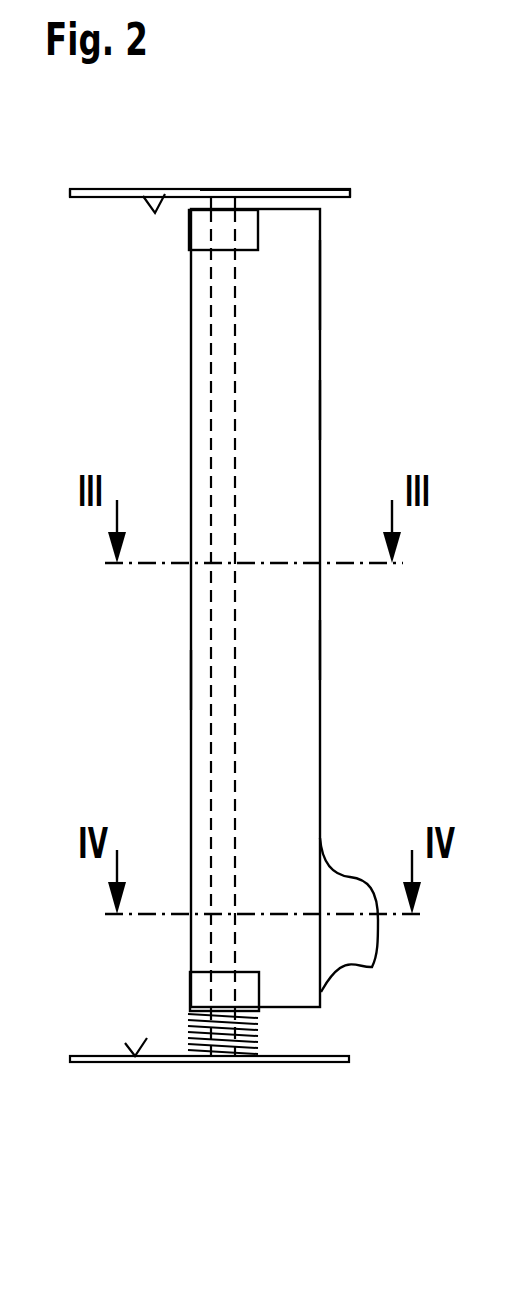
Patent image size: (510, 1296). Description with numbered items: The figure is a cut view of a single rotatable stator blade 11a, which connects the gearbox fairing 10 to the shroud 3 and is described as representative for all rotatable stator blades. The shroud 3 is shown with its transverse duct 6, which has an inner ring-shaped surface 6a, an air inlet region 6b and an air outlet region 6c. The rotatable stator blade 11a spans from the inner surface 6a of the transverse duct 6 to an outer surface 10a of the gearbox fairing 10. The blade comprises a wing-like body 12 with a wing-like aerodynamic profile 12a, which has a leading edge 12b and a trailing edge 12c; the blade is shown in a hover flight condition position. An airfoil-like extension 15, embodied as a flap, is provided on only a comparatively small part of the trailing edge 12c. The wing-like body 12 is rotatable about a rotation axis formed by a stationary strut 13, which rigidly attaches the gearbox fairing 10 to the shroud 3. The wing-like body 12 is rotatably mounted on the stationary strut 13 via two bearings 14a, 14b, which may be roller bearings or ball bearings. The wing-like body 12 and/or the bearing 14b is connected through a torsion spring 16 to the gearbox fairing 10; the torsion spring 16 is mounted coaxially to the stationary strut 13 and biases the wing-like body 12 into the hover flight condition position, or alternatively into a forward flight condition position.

The shroud 3 is at (310, 190).
The transverse duct 6 is at (104, 210).
The inner ring-shaped surface 6a is at (165, 194).
The air inlet region 6b is at (72, 193).
The air outlet region 6c is at (352, 193).
The gearbox fairing 10 is at (73, 1063).
The outer surface of the gearbox fairing 10a is at (147, 1038).
The rotatable stator blade 11a is at (323, 287).
The wing-like body 12 is at (287, 313).
The wing-like aerodynamic profile 12a is at (322, 412).
The leading edge 12b is at (191, 682).
The trailing edge 12c is at (320, 652).
The stationary strut 13 is at (228, 334).
The bearing 14a is at (198, 232).
The bearing 14b is at (203, 993).
The airfoil-like extension 15 is at (343, 889).
The torsion spring 16 is at (258, 1038).